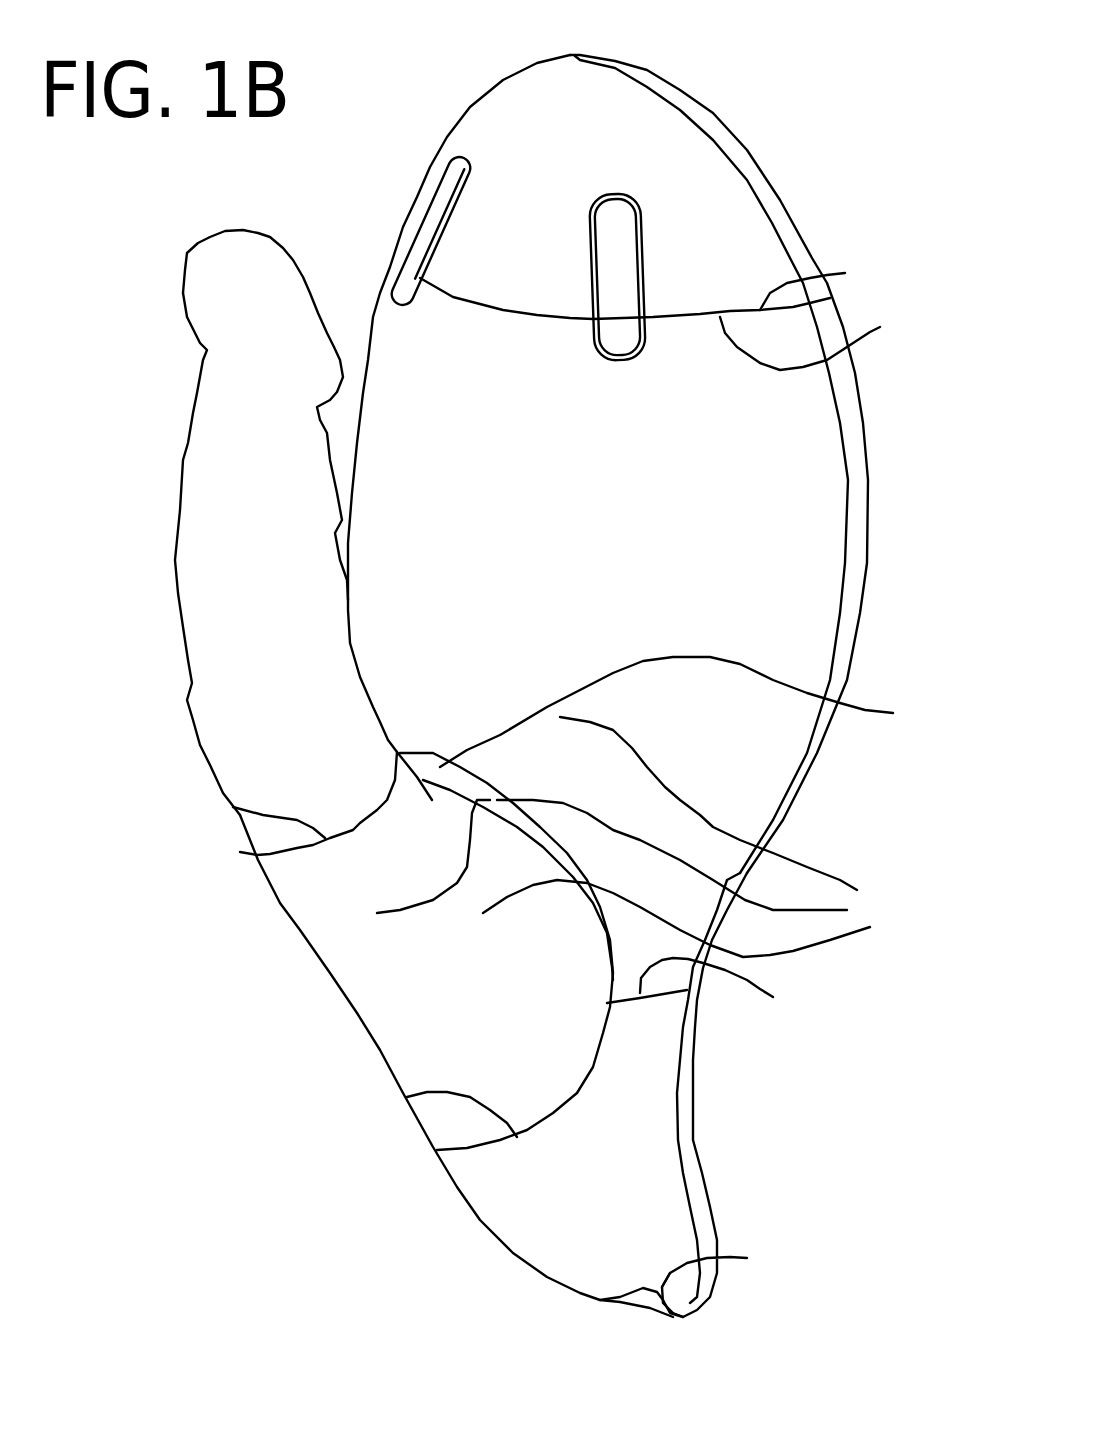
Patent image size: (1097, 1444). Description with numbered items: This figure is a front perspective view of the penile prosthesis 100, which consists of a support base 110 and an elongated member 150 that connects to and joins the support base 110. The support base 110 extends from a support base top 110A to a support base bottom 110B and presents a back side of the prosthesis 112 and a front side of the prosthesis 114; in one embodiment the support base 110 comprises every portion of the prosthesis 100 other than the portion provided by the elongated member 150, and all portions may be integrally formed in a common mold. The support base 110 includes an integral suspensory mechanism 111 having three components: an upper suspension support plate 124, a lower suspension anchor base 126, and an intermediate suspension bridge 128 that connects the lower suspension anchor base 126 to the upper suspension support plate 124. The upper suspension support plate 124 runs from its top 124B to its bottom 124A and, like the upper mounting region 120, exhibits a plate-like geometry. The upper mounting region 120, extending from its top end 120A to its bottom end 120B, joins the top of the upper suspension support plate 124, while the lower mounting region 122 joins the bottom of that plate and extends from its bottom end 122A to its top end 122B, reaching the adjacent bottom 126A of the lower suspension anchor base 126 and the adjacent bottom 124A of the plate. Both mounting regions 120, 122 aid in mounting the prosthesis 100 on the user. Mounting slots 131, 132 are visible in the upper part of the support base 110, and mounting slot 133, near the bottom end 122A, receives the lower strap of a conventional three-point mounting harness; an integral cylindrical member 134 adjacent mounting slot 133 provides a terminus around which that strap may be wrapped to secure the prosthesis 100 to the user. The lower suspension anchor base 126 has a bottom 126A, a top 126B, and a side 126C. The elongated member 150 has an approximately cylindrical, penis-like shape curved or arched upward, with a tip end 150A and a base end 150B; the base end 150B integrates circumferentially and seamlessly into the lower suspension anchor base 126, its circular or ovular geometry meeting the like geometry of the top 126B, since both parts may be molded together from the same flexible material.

The penile prosthesis 100 is at (905, 104).
The support base 110 is at (860, 413).
The support base top 110A is at (571, 53).
The support base bottom 110B is at (602, 1306).
The integral suspensory mechanism 111 is at (700, 861).
The back side of prosthesis 112 is at (790, 211).
The front side of prosthesis 114 is at (700, 545).
The upper mounting region 120 is at (690, 197).
The top end of upper mounting region 120A is at (587, 53).
The bottom end of upper mounting region 120B is at (845, 273).
The lower mounting region 122 is at (663, 1235).
The bottom of lower mounting region 122A is at (600, 1300).
The top end of lower mounting region 122B is at (660, 997).
The upper suspension support plate 124 is at (757, 640).
The bottom of upper suspension support plate 124A is at (720, 987).
The top of upper suspension support plate 124B is at (815, 337).
The lower suspension anchor base 126 is at (417, 967).
The bottom of lower suspension anchor base 126A is at (407, 1097).
The top of lower suspension anchor base 126B is at (353, 837).
The side of lower suspension anchor base 126C is at (377, 913).
The intermediate suspension bridge 128 is at (692, 712).
The mounting slot 131 is at (437, 212).
The mounting slot 132 is at (620, 267).
The mounting slot 133 is at (747, 1258).
The integral cylindrical member 134 is at (645, 1312).
The elongated member 150 is at (227, 439).
The tip end of elongated member 150A is at (231, 252).
The base end of elongated member 150B is at (233, 807).